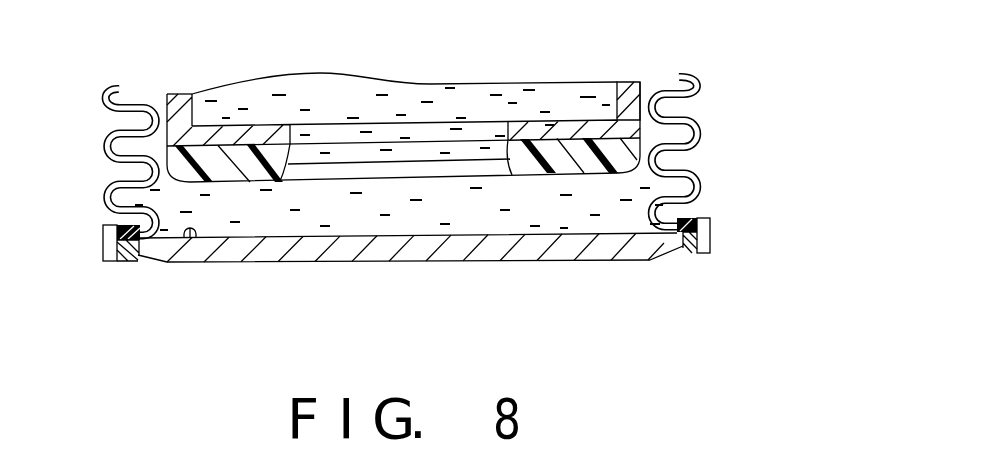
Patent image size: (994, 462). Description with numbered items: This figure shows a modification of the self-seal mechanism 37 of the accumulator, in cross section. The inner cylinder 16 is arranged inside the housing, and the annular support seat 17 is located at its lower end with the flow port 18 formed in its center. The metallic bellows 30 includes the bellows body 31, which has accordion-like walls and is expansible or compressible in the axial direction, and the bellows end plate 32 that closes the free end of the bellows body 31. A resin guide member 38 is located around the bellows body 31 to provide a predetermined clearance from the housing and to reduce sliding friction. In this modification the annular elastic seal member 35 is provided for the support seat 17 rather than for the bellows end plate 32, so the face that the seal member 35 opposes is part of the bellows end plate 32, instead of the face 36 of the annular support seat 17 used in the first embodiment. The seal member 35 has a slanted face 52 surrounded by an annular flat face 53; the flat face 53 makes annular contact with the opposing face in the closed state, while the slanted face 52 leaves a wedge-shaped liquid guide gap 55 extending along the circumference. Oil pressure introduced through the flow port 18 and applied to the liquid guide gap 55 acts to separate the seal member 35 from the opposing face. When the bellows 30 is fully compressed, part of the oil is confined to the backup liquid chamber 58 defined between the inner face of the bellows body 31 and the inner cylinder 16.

The inner cylinder 16 is at (629, 95).
The annular support seat 17 is at (561, 128).
The flow port 18 is at (462, 120).
The metallic bellows 30 is at (716, 146).
The bellows body 31 is at (699, 151).
The bellows end plate 32 is at (291, 252).
The elastic seal member 35 is at (243, 178).
The face of the annular support seat 36 is at (190, 241).
The self-seal mechanism 37 is at (600, 222).
The guide member 38 is at (122, 261).
The slanted face 52 is at (275, 226).
The annular flat face 53 is at (208, 184).
The liquid guide gap 55 is at (272, 165).
The backup liquid chamber 58 is at (146, 91).